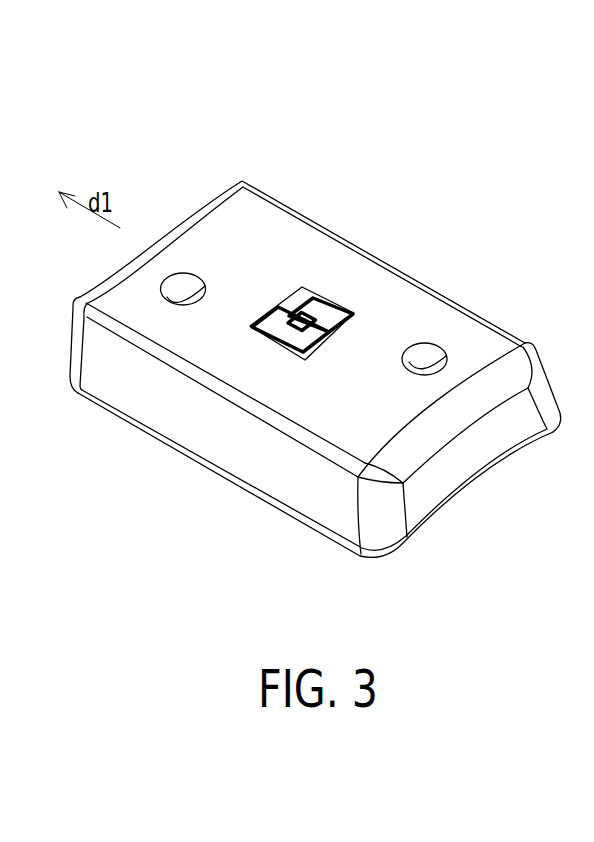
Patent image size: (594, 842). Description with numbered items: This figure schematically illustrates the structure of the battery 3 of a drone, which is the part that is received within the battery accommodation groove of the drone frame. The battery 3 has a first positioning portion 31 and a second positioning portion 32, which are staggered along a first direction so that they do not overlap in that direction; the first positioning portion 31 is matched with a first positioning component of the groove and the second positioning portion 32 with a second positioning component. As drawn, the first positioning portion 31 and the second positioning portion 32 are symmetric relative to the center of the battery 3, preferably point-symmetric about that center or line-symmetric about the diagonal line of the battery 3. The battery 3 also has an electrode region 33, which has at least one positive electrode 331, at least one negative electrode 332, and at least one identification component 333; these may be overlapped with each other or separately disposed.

The battery 3 is at (588, 121).
The first positioning portion 31 is at (177, 296).
The second positioning portion 32 is at (448, 355).
The electrode region 33 is at (473, 162).
The positive electrode 331 is at (335, 315).
The negative electrode 332 is at (298, 294).
The identification component 333 is at (303, 312).